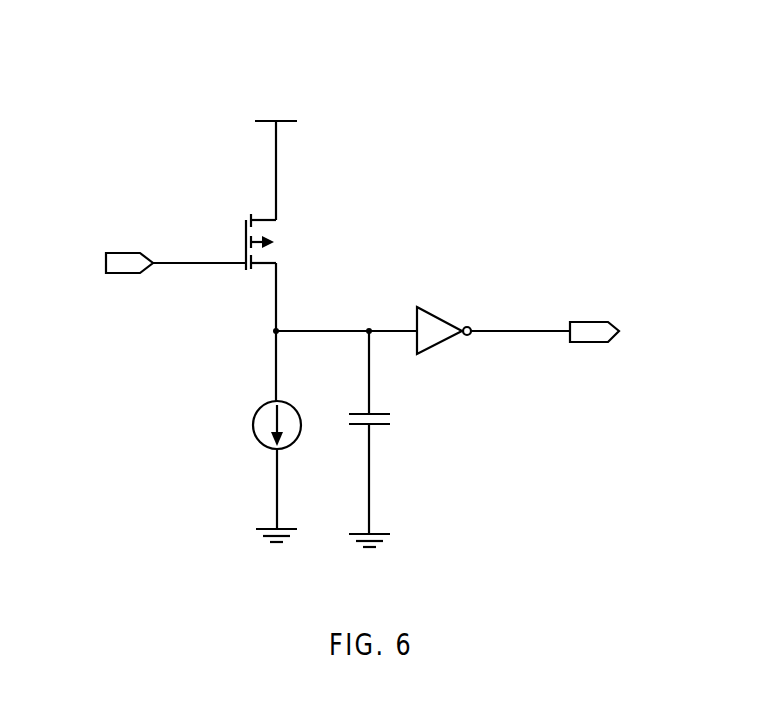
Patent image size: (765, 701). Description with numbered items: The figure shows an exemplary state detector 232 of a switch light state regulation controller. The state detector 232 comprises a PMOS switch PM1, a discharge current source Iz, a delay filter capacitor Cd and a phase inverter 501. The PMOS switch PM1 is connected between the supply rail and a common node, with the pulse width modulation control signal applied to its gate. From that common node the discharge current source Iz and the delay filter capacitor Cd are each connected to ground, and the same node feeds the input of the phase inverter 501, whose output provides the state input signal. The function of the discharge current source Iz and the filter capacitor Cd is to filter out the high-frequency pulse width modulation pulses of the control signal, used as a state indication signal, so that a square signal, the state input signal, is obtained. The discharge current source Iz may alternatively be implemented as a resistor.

The state detector 232 is at (103, 32).
The phase inverter 501 is at (444, 320).
The PMOS switch PM1 is at (293, 242).
The discharge current source Iz is at (261, 436).
The delay filter capacitor Cd is at (394, 439).